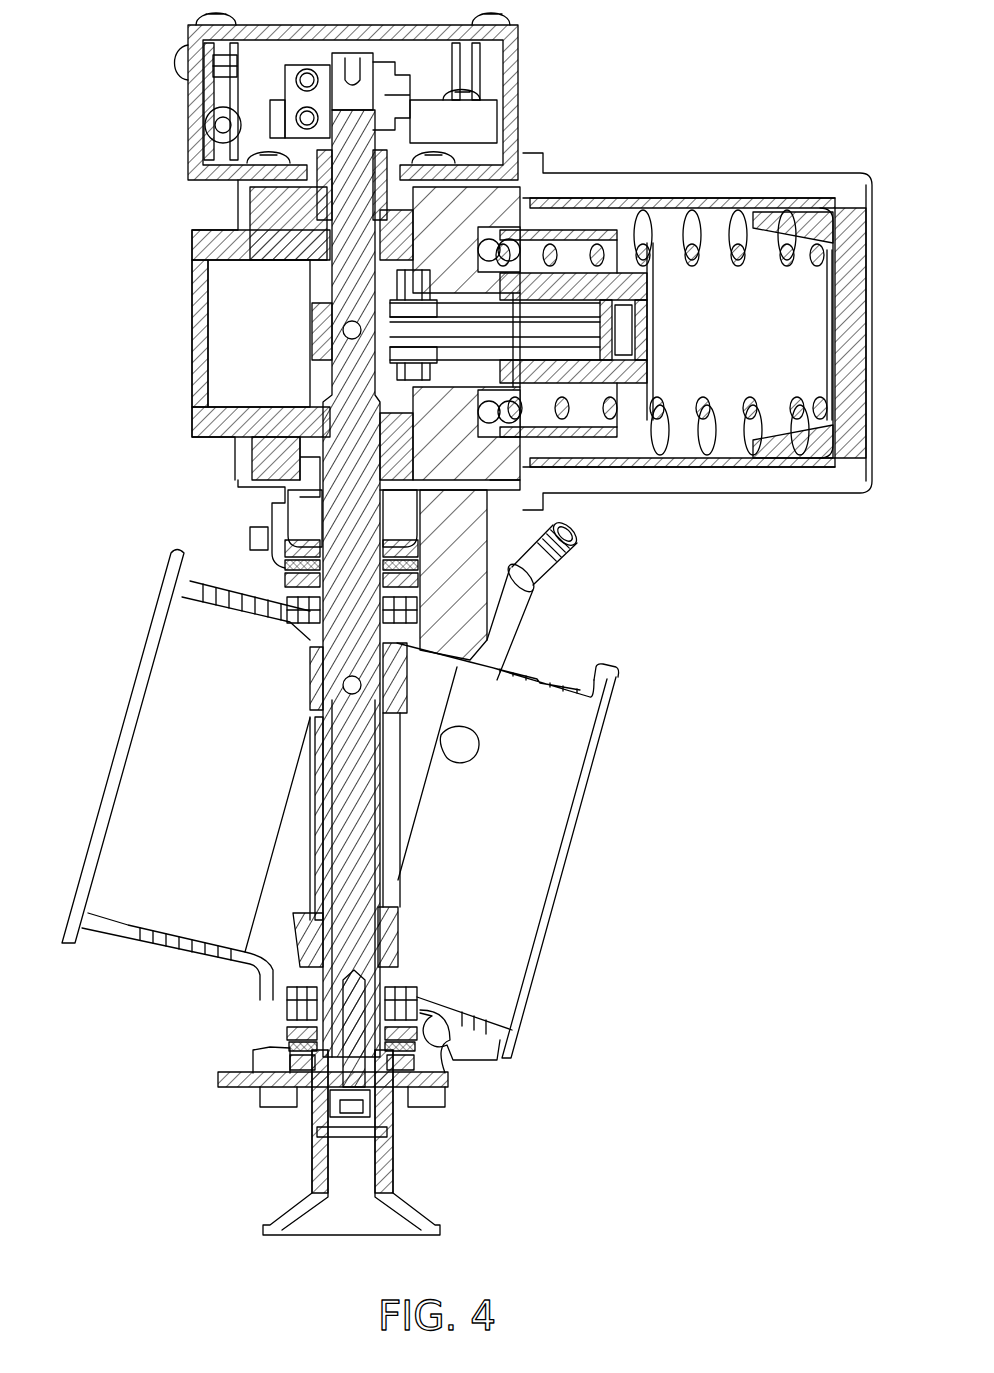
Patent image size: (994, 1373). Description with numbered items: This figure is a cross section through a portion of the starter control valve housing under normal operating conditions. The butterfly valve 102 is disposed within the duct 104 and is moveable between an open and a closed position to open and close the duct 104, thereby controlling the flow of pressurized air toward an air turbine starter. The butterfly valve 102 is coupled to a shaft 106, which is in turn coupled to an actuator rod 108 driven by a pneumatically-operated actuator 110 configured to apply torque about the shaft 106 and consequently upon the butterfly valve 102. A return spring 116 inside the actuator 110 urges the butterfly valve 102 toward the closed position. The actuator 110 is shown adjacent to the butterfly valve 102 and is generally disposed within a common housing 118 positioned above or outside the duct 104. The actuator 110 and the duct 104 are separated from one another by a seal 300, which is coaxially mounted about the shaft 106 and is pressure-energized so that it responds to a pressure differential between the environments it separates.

The butterfly valve 102 is at (397, 767).
The duct 104 is at (202, 898).
The shaft 106 is at (357, 600).
The actuator rod 108 is at (503, 330).
The actuator 110 is at (639, 295).
The return spring 116 is at (643, 218).
The common housing 118 is at (842, 178).
The seal 300 is at (292, 553).